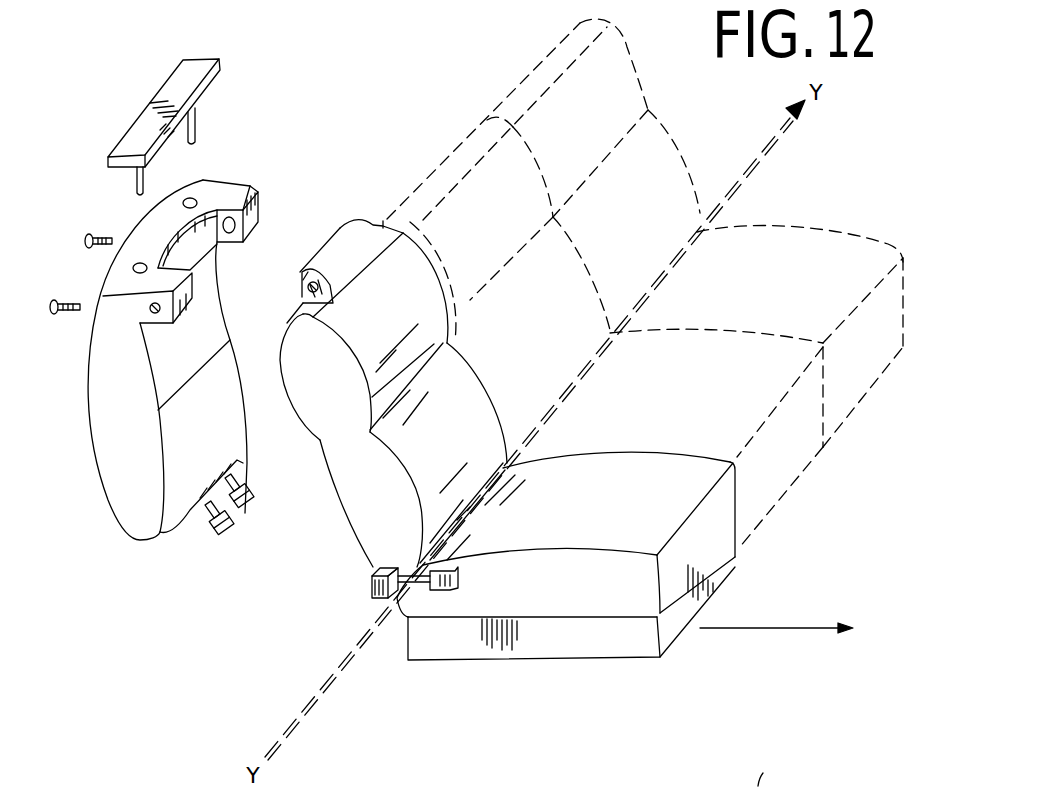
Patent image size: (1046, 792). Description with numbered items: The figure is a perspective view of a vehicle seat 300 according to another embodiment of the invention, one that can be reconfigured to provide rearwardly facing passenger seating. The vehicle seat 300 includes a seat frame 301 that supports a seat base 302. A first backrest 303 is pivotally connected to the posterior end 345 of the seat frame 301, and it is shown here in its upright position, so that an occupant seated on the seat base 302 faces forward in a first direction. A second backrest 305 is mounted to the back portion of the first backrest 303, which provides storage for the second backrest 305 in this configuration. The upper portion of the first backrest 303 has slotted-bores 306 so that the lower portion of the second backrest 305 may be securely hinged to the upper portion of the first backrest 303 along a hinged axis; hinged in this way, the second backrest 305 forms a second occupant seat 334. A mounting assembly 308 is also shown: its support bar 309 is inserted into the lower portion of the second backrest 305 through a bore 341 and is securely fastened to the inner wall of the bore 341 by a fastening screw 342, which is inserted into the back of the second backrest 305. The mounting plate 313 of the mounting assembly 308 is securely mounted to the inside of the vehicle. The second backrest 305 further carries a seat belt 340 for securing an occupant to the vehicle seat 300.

The vehicle seat 300 is at (531, 460).
The seat frame 301 is at (643, 637).
The seat base 302 is at (670, 503).
The first backrest 303 is at (447, 397).
The second backrest 305 is at (153, 388).
The slotted-bores 306 is at (151, 309).
The mounting assembly 308 is at (179, 124).
The support bar 309 is at (136, 194).
The mounting plate 313 is at (168, 85).
The second occupant seat 334 is at (782, 778).
The seat belt 340 is at (200, 542).
The bore 341 is at (195, 199).
The fastening screw 342 is at (92, 270).
The posterior end 345 is at (334, 616).